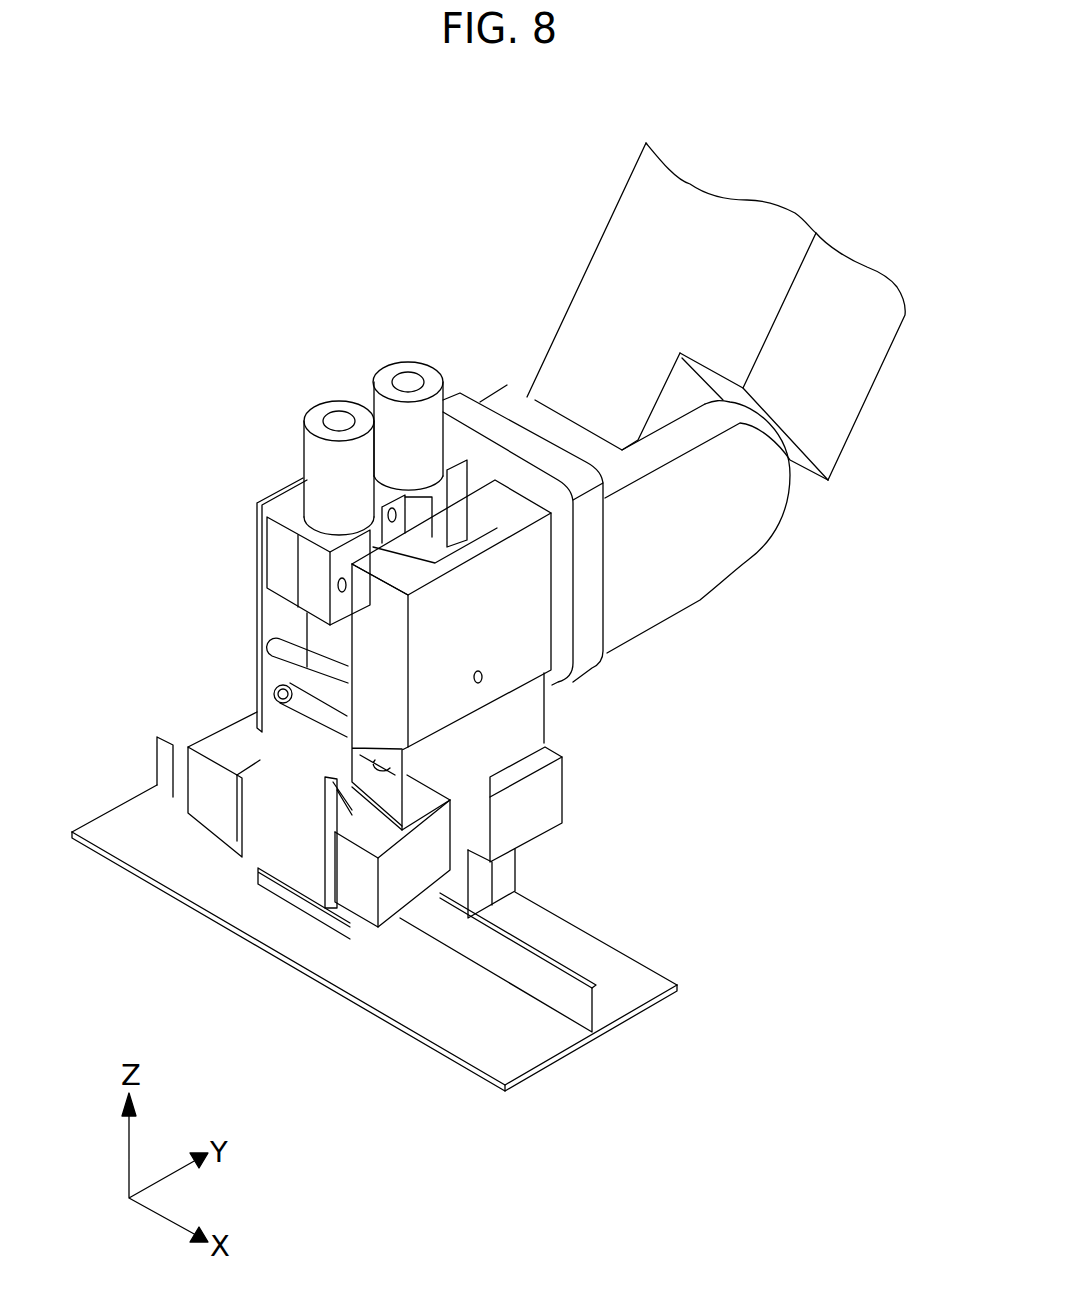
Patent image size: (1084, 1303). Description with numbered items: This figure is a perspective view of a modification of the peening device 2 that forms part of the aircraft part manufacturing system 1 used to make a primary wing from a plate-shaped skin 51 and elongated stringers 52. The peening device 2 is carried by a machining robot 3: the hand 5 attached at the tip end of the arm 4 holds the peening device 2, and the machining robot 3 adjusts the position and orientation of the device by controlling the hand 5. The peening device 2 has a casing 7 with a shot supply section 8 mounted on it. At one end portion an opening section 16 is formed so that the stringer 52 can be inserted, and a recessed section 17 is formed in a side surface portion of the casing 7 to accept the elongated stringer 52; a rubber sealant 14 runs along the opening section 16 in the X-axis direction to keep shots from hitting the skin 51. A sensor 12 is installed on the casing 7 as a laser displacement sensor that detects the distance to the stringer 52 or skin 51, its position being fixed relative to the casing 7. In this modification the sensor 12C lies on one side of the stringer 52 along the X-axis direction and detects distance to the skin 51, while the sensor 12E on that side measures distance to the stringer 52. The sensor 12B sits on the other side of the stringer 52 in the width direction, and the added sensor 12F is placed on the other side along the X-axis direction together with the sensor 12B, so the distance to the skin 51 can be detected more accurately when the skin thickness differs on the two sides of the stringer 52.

The aircraft part manufacturing system 1 is at (424, 163).
The peening device 2 is at (584, 751).
The machining robot 3 is at (838, 546).
The arm 4 is at (835, 413).
The hand 5 is at (695, 578).
The casing 7 is at (525, 712).
The shot supply section 8 is at (320, 453).
The sensor 12 is at (426, 914).
The sensor 12B is at (212, 808).
The sensor 12C is at (552, 800).
The sensor 12E is at (502, 882).
The sensor 12F is at (352, 893).
The sealant 14 is at (313, 905).
The opening section 16 is at (408, 918).
The recessed section 17 is at (410, 915).
The skin 51 is at (658, 1000).
The stringer 52 is at (595, 997).